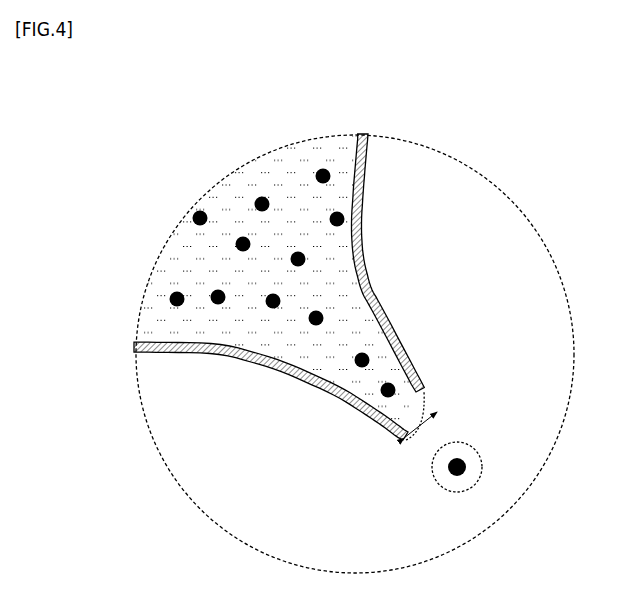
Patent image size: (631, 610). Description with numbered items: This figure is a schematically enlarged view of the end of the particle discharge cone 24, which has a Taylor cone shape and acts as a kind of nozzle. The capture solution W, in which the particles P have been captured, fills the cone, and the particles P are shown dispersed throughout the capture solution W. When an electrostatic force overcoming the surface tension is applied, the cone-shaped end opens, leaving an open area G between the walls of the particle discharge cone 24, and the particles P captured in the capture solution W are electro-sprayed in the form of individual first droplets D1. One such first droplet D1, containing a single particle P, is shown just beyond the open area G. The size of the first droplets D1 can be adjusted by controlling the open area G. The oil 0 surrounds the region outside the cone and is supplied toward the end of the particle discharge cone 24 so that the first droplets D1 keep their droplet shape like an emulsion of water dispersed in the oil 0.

The oil 0 is at (537, 378).
The capture solution W is at (188, 255).
The particle discharge cone 24 is at (374, 292).
The open area G is at (420, 422).
The particles P is at (216, 300).
The first droplets D1 is at (482, 466).